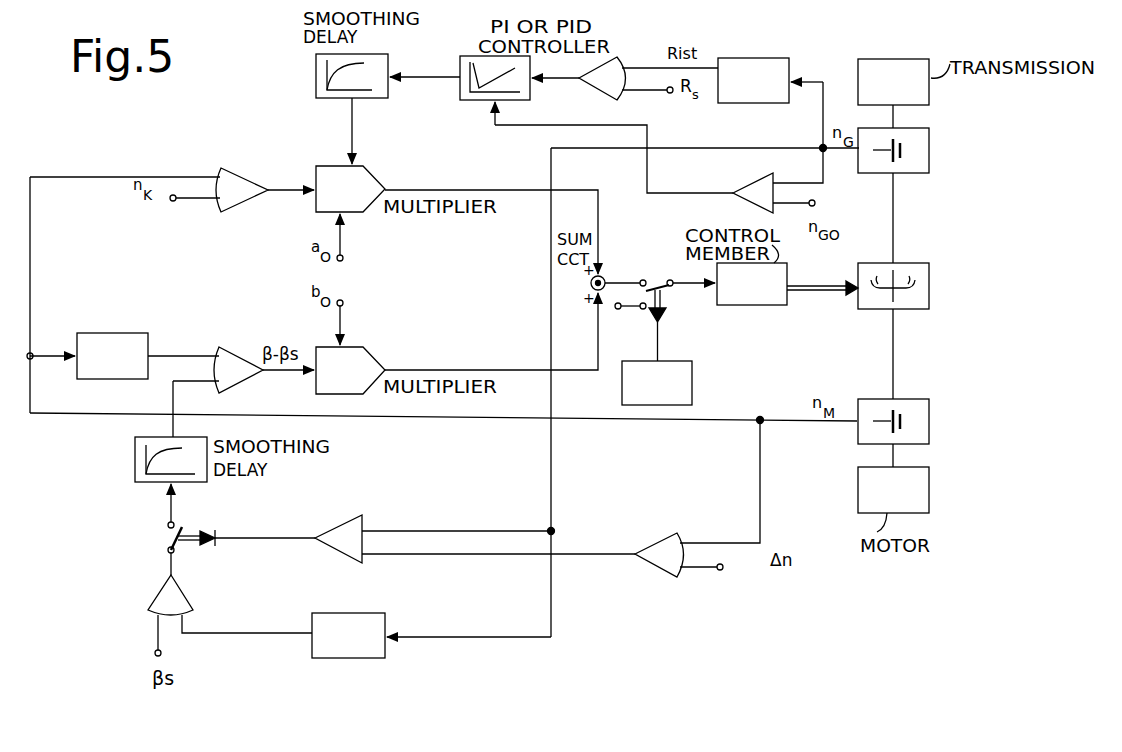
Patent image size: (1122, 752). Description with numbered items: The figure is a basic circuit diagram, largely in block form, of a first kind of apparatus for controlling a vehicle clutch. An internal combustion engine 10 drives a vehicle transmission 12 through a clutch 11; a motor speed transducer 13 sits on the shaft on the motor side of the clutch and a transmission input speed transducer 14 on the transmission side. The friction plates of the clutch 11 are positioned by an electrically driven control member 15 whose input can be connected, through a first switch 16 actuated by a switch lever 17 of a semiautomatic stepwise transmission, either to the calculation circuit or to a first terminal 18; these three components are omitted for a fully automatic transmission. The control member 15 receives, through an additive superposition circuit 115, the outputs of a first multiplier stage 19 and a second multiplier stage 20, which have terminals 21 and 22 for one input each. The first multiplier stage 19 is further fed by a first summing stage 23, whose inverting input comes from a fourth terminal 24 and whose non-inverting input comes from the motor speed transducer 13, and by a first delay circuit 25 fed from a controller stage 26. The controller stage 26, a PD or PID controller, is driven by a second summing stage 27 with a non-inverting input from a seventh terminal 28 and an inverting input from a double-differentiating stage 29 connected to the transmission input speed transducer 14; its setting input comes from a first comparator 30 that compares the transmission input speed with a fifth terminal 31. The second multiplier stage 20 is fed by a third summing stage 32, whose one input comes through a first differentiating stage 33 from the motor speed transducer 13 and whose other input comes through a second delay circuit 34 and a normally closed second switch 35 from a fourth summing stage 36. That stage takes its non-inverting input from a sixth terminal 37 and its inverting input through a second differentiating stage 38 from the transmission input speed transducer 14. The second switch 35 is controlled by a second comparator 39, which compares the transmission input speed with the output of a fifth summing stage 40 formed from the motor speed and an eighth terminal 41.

The internal combustion engine 10 is at (918, 485).
The clutch 11 is at (918, 293).
The vehicle transmission 12 is at (918, 90).
The motor speed transducer 13 is at (918, 416).
The transmission input speed transducer 14 is at (918, 151).
The control member 15 is at (760, 297).
The first switch 16 is at (657, 290).
The switch lever 17 is at (686, 368).
The first terminal 18 is at (618, 310).
The first multiplier stage 19 is at (373, 181).
The second multiplier stage 20 is at (375, 362).
The terminal 21 is at (345, 258).
The terminal 22 is at (345, 303).
The first summing stage 23 is at (242, 180).
The fourth terminal 24 is at (170, 201).
The first delay circuit 25 is at (322, 98).
The controller stage 26 is at (460, 100).
The second summing stage 27 is at (600, 82).
The seventh terminal 28 is at (671, 94).
The double-differentiating stage 29 is at (756, 104).
The first comparator 30 is at (763, 192).
The fifth terminal 31 is at (816, 206).
The third summing stage 32 is at (240, 360).
The first differentiating stage 33 is at (128, 340).
The second delay circuit 34 is at (140, 463).
The second switch 35 is at (178, 527).
The fourth summing stage 36 is at (168, 590).
The sixth terminal 37 is at (155, 653).
The second differentiating stage 38 is at (368, 620).
The second comparator 39 is at (340, 530).
The fifth summing stage 40 is at (655, 548).
The eighth terminal 41 is at (724, 570).
The additive superposition circuit 115 is at (606, 278).